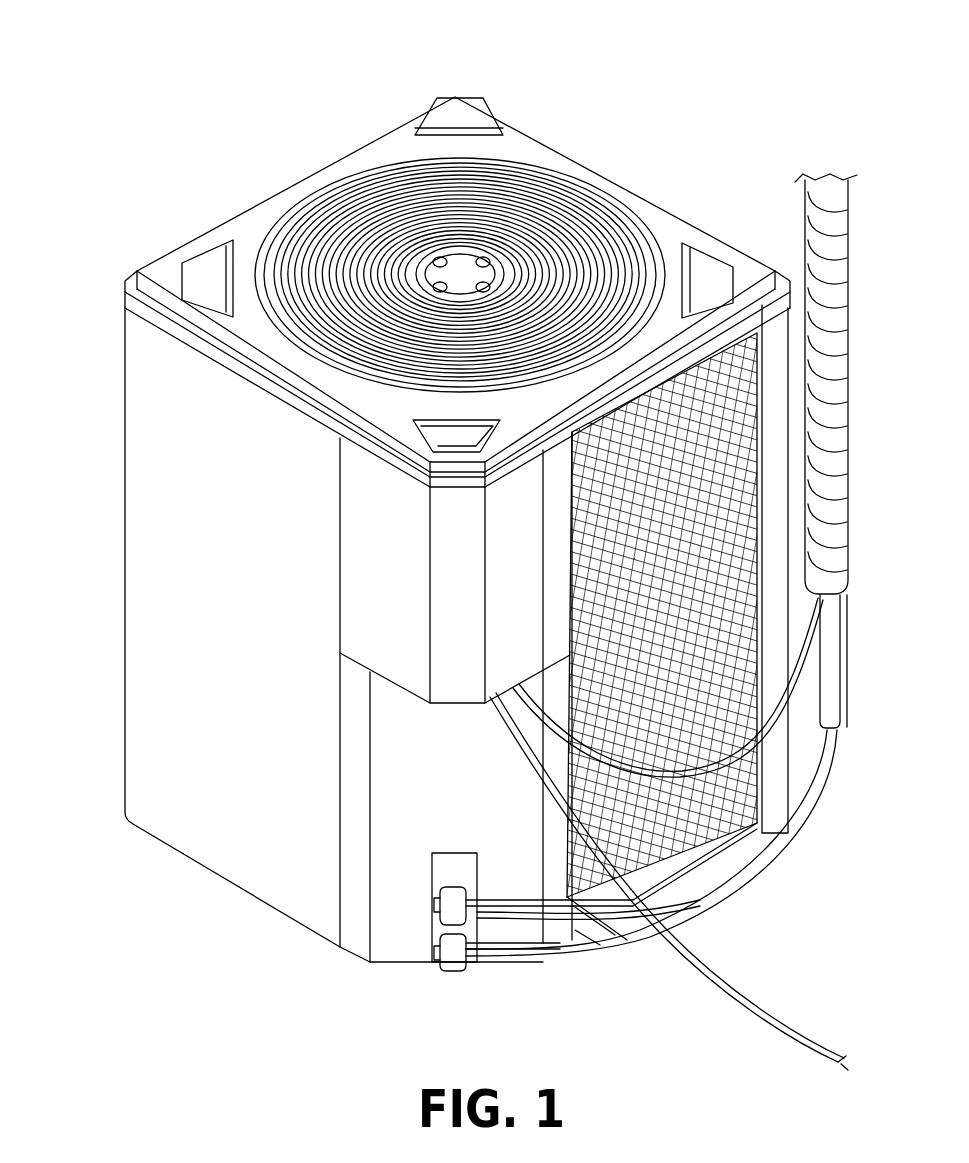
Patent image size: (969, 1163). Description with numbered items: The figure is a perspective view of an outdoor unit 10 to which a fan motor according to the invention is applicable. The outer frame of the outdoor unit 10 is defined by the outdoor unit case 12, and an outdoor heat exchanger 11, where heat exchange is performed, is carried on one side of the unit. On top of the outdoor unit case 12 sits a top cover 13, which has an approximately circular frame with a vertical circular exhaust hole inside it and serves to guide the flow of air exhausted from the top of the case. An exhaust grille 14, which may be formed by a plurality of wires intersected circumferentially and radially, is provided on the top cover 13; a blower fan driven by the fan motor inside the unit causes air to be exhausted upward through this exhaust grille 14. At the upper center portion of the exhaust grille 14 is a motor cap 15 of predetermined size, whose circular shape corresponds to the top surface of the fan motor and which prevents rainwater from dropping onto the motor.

The outdoor unit 10 is at (742, 93).
The outdoor heat exchanger 11 is at (737, 656).
The outdoor unit case 12 is at (152, 625).
The top cover 13 is at (281, 222).
The exhaust grille 14 is at (588, 228).
The motor cap 15 is at (460, 262).